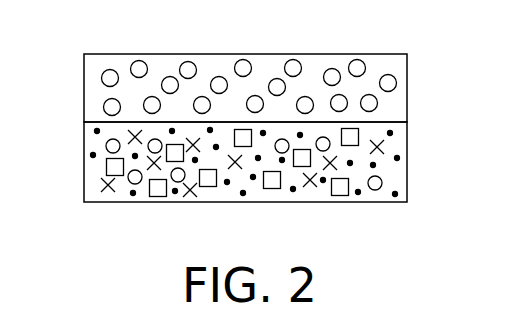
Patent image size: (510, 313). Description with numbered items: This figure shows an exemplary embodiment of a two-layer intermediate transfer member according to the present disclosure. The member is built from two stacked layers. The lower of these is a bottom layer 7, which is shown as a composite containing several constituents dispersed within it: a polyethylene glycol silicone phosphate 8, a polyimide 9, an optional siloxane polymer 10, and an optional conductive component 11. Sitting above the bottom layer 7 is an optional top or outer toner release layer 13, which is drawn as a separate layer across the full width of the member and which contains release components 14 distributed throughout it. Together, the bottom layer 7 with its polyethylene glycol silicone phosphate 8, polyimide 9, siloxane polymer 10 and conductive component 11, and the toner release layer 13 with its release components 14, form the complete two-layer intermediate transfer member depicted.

The bottom layer 7 is at (407, 135).
The polyethylene glycol silicone phosphate 8 is at (382, 182).
The polyimide 9 is at (272, 189).
The siloxane polymer 10 is at (101, 183).
The conductive component 11 is at (94, 131).
The top or outer toner release layer 13 is at (407, 93).
The release components 14 is at (242, 58).